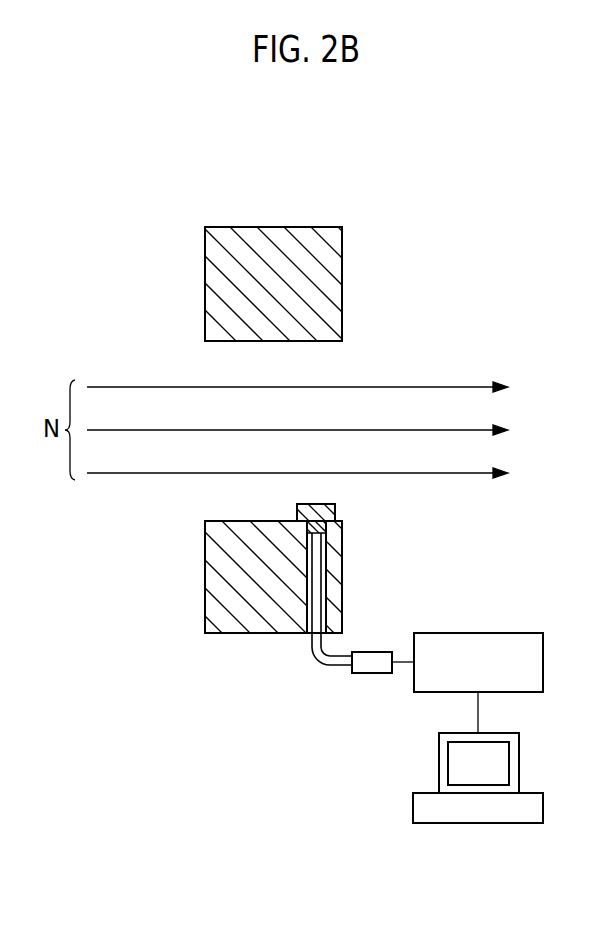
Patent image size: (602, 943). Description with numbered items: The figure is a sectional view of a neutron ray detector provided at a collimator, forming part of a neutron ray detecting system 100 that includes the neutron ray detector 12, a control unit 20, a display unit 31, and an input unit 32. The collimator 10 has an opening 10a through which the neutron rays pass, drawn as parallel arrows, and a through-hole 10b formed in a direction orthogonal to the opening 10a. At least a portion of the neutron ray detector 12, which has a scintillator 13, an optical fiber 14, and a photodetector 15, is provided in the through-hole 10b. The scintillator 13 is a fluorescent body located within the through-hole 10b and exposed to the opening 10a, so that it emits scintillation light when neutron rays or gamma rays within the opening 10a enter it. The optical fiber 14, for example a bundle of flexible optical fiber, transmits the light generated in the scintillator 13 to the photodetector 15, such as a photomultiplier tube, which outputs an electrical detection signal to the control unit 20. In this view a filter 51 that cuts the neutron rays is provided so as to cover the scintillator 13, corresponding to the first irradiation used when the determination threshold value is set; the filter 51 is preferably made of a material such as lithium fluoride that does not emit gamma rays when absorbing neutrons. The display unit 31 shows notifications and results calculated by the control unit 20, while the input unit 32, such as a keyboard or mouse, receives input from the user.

The collimator 10 is at (281, 431).
The opening 10a is at (326, 341).
The through-hole 10b is at (309, 634).
The neutron ray detector 12 is at (389, 592).
The scintillator 13 is at (327, 529).
The optical fiber 14 is at (322, 567).
The photodetector 15 is at (396, 633).
The control unit 20 is at (544, 660).
The display unit 31 is at (520, 763).
The input unit 32 is at (544, 808).
The filter 51 is at (297, 512).
The neutron ray detecting system 100 is at (297, 704).